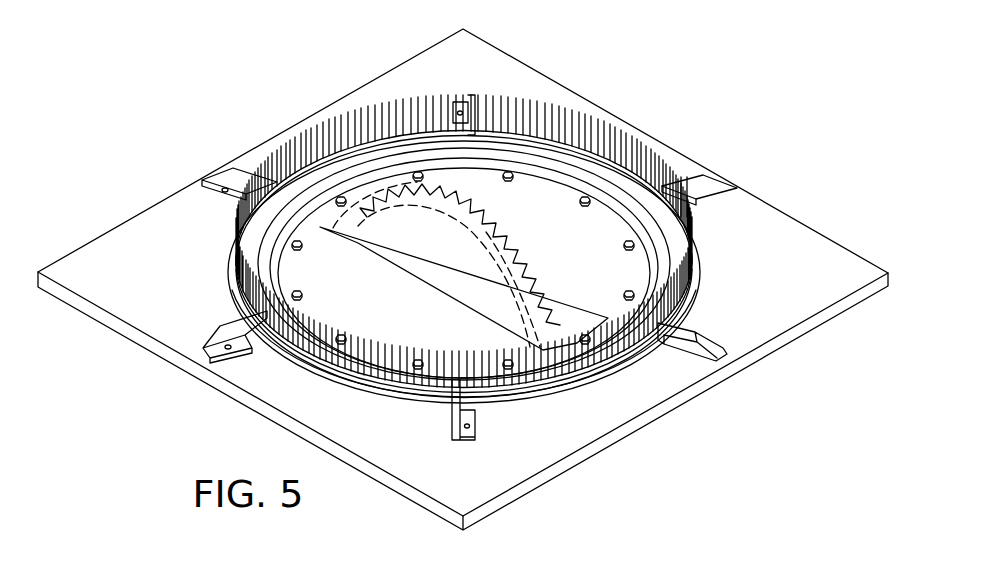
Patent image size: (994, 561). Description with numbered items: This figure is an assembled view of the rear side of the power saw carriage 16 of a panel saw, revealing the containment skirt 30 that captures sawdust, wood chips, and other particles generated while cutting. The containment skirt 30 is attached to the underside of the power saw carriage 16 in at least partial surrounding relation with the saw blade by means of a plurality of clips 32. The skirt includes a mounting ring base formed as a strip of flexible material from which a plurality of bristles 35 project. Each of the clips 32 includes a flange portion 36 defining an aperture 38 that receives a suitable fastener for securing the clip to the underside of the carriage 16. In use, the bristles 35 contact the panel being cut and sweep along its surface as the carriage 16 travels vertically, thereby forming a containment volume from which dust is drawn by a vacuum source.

The power saw carriage 16 is at (133, 295).
The containment skirt 30 is at (707, 257).
The clips 32 is at (213, 182).
The bristles 35 is at (313, 128).
The flange portion 36 is at (735, 190).
The aperture 38 is at (707, 198).